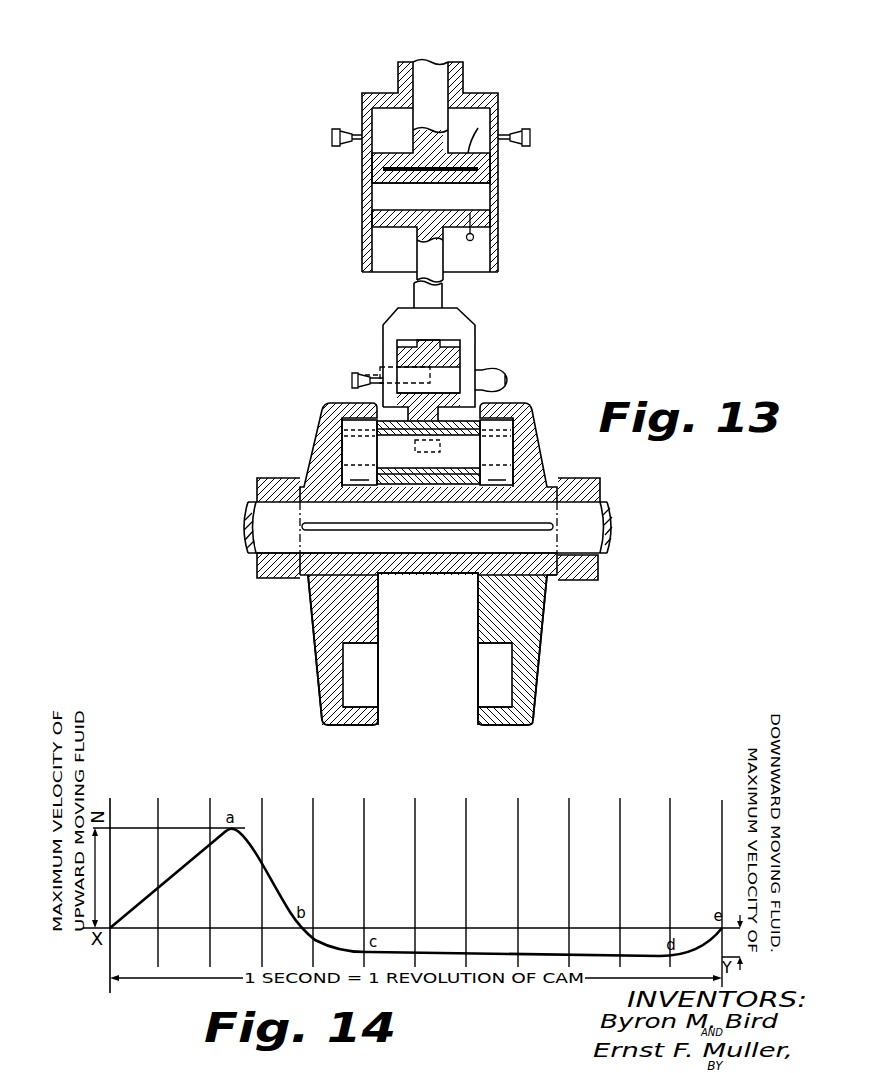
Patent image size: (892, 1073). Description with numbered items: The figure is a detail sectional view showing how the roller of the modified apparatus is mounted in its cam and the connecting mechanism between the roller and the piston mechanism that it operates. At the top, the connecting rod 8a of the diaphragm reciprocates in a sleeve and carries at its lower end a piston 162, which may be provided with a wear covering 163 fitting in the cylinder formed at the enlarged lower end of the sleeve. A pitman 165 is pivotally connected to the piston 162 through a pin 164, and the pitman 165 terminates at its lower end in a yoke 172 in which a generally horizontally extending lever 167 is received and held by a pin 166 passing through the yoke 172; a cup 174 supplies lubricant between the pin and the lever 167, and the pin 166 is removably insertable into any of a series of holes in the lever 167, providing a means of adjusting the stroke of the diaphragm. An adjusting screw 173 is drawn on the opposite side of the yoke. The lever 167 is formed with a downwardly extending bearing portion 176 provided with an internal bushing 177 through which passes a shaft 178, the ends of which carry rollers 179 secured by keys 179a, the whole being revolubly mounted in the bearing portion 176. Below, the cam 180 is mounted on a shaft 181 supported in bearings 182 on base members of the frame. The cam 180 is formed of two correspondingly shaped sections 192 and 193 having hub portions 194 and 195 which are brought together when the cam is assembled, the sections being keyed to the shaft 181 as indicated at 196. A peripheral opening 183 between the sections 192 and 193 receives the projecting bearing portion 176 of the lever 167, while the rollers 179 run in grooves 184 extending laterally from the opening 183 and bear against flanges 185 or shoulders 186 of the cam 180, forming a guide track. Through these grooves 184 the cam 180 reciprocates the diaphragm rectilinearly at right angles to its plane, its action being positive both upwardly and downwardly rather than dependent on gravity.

The connecting rod 8a is at (425, 72).
The piston 162 is at (467, 153).
The wear covering 163 is at (478, 169).
The pin 164 is at (477, 199).
The pitman 165 is at (432, 257).
The pin 166 is at (448, 377).
The lever 167 is at (458, 350).
The yoke 172 is at (467, 330).
The adjusting screw 173 is at (505, 370).
The cup 174 is at (355, 373).
The bearing portion 176 is at (462, 421).
The internal bushing 177 is at (407, 484).
The shaft 178 is at (403, 443).
The rollers 179 is at (355, 448).
The keys 179a is at (550, 413).
The cam 180 is at (312, 714).
The shaft 181 is at (595, 523).
The bearings 182 is at (600, 568).
The peripheral opening 183 is at (447, 675).
The grooves 184 is at (487, 693).
The flanges 185 is at (353, 720).
The shoulders 186 is at (355, 645).
The cam section 192 is at (325, 617).
The cam section 193 is at (530, 613).
The hub portion 194 is at (403, 575).
The hub portion 195 is at (448, 575).
The key 196 is at (552, 573).